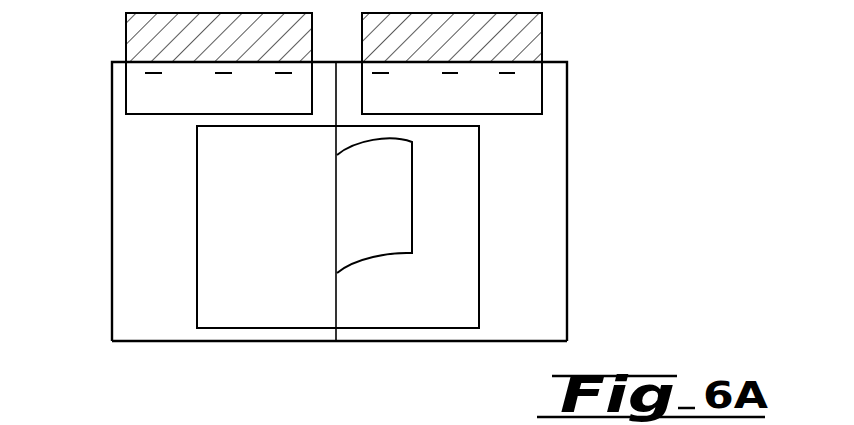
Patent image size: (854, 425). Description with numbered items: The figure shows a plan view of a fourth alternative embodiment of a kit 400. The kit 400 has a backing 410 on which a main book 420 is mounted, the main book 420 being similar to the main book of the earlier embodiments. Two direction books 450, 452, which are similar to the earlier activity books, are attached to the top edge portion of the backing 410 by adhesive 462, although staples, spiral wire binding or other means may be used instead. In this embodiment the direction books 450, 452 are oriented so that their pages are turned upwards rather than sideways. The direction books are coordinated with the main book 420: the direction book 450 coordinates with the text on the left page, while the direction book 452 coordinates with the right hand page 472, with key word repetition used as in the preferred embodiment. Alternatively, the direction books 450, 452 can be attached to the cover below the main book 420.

The kit 400 is at (490, 370).
The backing 410 is at (168, 356).
The main book 420 is at (178, 197).
The direction book 450 is at (158, 0).
The direction book 452 is at (512, 0).
The adhesive 462 is at (157, 73).
The right hand page 472 is at (453, 187).